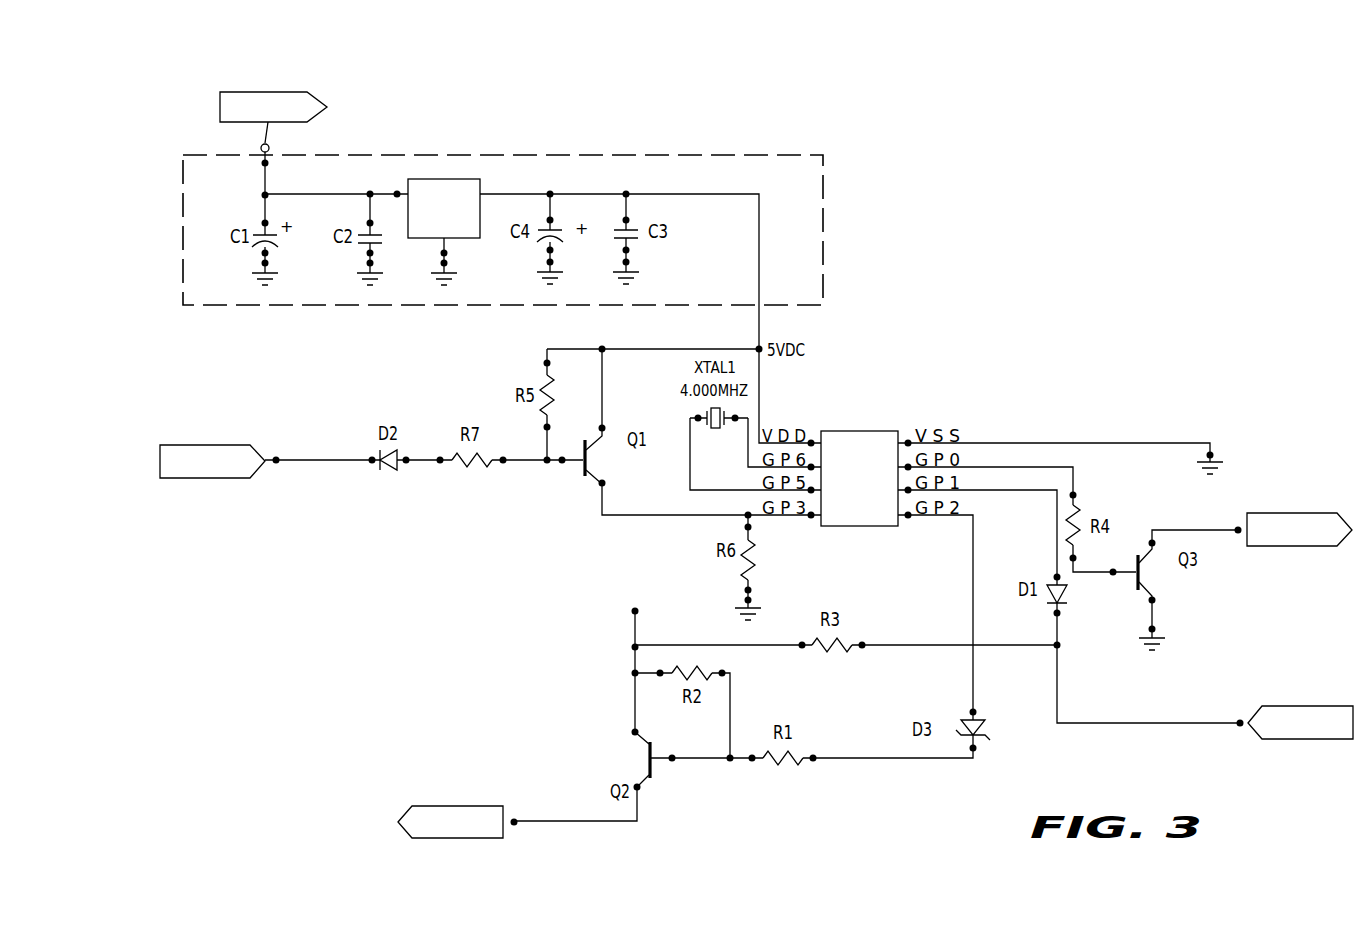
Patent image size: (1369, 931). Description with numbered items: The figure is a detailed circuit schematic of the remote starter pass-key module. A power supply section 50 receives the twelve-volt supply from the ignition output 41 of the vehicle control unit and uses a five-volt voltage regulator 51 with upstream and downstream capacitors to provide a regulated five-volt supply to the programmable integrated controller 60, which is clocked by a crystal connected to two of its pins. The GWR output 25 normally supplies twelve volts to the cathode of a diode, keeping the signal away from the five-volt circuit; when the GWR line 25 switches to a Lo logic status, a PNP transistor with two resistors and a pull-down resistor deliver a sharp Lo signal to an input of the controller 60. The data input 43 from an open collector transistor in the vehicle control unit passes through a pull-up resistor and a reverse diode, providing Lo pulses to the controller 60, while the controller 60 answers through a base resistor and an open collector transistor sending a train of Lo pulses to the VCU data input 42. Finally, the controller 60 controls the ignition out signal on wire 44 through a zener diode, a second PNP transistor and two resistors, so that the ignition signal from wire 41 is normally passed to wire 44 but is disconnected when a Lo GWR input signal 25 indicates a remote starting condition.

The ignition output 41 is at (220, 105).
The power supply section 50 is at (823, 262).
The 5V voltage regulator 51 is at (411, 180).
The GWR output 25 is at (208, 445).
The programmable integrated controller 60 is at (860, 526).
The VCU data input 42 is at (1297, 513).
The data input 43 is at (1306, 706).
The wire 44 is at (459, 806).